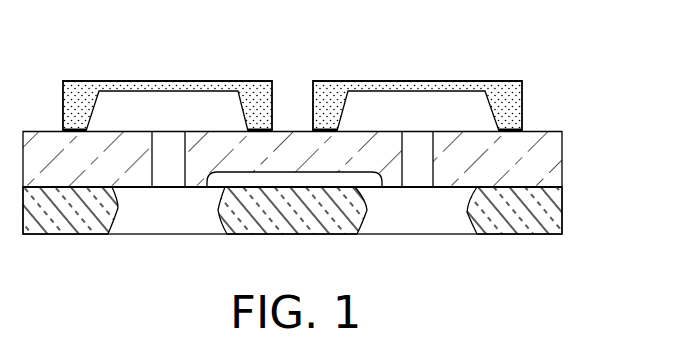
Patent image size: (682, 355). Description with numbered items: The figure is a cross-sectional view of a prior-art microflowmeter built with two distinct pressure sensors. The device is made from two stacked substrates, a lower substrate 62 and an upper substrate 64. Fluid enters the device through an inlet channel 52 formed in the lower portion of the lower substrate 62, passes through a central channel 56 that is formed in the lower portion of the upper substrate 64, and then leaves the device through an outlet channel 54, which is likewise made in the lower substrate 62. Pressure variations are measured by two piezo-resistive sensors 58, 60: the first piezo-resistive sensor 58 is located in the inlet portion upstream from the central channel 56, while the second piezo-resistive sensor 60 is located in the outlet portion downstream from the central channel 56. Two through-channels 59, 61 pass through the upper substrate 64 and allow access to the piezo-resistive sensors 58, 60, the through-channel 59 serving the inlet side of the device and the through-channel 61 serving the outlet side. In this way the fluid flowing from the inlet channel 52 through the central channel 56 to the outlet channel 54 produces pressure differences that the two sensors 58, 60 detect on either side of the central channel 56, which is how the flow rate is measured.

The inlet channel 52 is at (118, 210).
The outlet channel 54 is at (467, 212).
The central channel 56 is at (287, 180).
The piezo-resistive sensor 58 is at (83, 96).
The through-channel 59 is at (162, 171).
The piezo-resistive sensor 60 is at (498, 97).
The through-channel 61 is at (432, 171).
The lower substrate 62 is at (548, 215).
The upper substrate 64 is at (548, 153).